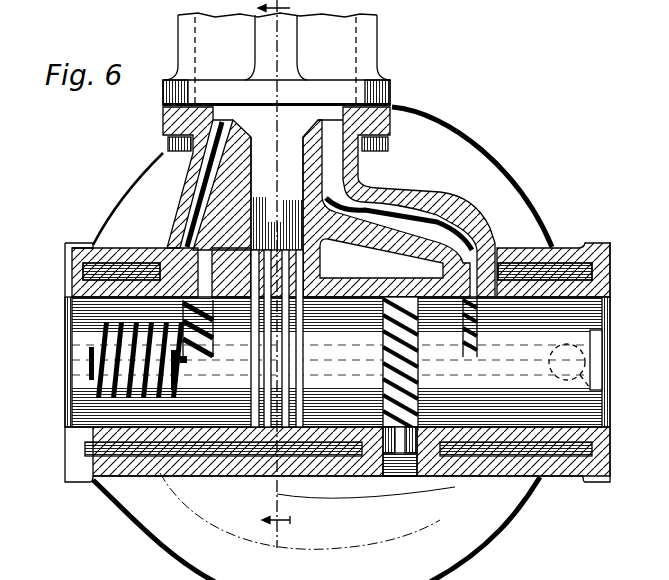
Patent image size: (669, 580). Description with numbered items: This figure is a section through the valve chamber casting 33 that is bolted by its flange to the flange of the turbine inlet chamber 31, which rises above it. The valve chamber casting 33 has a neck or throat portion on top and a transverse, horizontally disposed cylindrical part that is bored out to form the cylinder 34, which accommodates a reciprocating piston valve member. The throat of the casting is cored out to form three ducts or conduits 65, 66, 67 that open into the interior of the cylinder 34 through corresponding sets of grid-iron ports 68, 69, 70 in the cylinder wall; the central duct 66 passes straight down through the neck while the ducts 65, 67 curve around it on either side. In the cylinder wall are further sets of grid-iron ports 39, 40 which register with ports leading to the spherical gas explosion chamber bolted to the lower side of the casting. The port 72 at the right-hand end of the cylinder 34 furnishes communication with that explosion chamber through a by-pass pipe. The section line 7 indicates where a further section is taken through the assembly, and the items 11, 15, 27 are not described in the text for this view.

The section line 7- 7 is at (274, 279).
The turbine inlet chamber 31 is at (343, 48).
The valve chamber casting 33 is at (431, 200).
The duct 65 is at (220, 177).
The duct 67 is at (333, 172).
The duct 66 is at (277, 193).
The cylinder 34 is at (70, 410).
The packing 27 is at (532, 270).
The grid-iron ports 69 is at (277, 247).
The grid-iron ports 39 is at (289, 345).
The spring 11 is at (97, 342).
The grid-iron ports 68 is at (197, 352).
The grid-iron ports 70 is at (466, 323).
The grid-iron ports 40 is at (413, 383).
The bottom bolt 15 is at (471, 477).
The port 72 is at (597, 348).